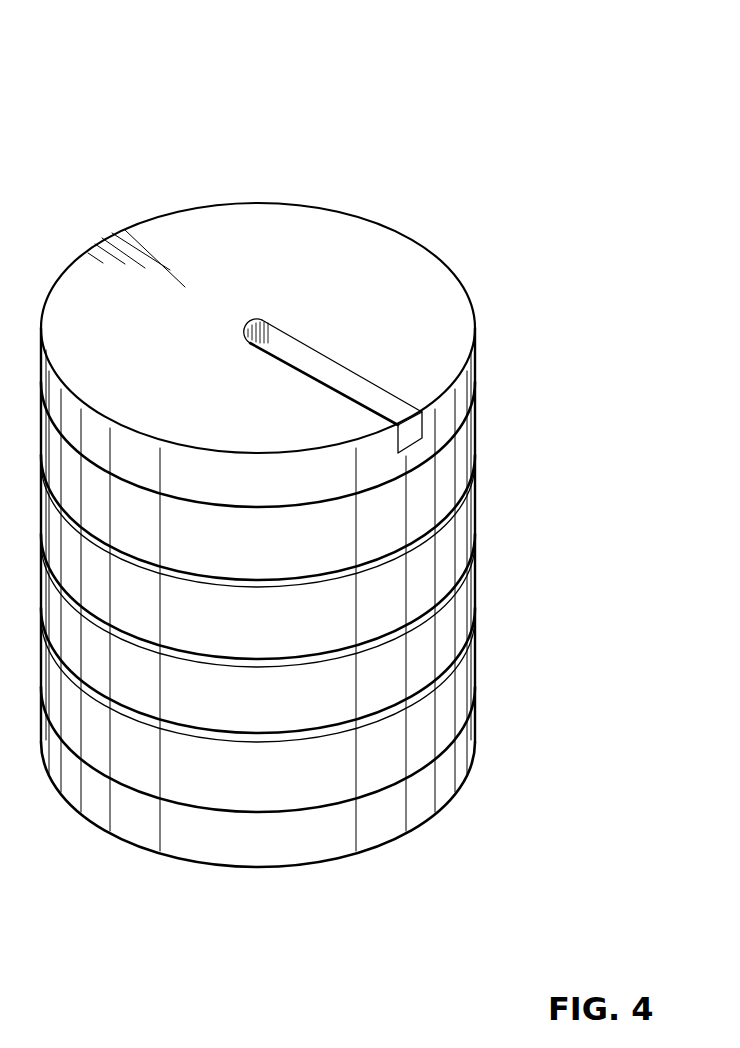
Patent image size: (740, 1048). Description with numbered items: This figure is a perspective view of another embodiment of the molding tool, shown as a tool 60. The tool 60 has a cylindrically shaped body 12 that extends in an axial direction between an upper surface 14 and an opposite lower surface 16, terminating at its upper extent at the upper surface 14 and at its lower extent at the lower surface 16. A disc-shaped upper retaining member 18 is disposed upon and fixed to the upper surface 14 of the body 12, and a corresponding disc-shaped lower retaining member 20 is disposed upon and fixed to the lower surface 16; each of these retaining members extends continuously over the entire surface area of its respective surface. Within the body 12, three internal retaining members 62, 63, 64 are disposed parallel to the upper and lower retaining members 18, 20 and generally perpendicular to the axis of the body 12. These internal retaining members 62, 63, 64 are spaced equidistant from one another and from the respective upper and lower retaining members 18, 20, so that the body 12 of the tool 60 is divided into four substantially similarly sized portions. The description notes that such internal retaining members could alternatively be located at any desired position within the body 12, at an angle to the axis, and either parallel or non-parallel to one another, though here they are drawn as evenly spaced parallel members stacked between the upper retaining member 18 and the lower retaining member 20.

The tool 60 is at (418, 85).
The upper retaining member 18 is at (435, 343).
The upper surface 14 is at (437, 452).
The internal retaining member 62 is at (438, 532).
The internal retaining member 63 is at (438, 612).
The body 12 is at (438, 648).
The internal retaining member 64 is at (438, 688).
The lower surface 16 is at (450, 745).
The lower retaining member 20 is at (465, 772).